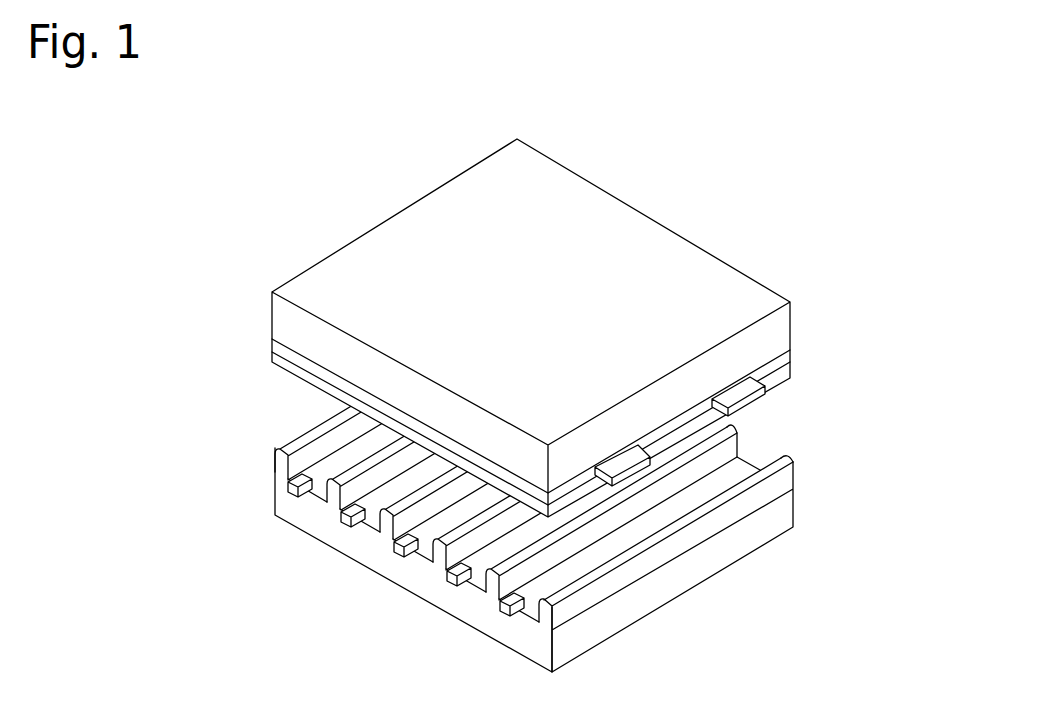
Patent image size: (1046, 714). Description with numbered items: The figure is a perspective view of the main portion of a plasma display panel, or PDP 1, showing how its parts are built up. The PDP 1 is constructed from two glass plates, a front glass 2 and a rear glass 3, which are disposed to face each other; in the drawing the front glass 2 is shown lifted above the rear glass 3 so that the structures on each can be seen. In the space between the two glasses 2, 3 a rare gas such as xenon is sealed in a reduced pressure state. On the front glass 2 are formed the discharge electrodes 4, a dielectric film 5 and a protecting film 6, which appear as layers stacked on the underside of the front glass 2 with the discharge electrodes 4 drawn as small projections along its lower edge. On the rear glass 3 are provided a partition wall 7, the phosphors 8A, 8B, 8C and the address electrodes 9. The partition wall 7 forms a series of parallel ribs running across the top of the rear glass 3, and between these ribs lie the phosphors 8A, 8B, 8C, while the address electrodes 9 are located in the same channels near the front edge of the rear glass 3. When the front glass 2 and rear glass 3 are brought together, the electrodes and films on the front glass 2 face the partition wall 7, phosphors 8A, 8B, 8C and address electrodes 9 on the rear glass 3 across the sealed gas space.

The PDP 1 is at (556, 408).
The front glass 2 is at (494, 328).
The rear glass 3 is at (675, 585).
The discharge electrodes 4 is at (748, 390).
The dielectric film 5 is at (272, 343).
The protecting film 6 is at (272, 360).
The partition wall 7 is at (703, 528).
The phosphor 8A is at (315, 505).
The phosphor 8B is at (367, 538).
The phosphor 8C is at (413, 560).
The address electrodes 9 is at (394, 575).